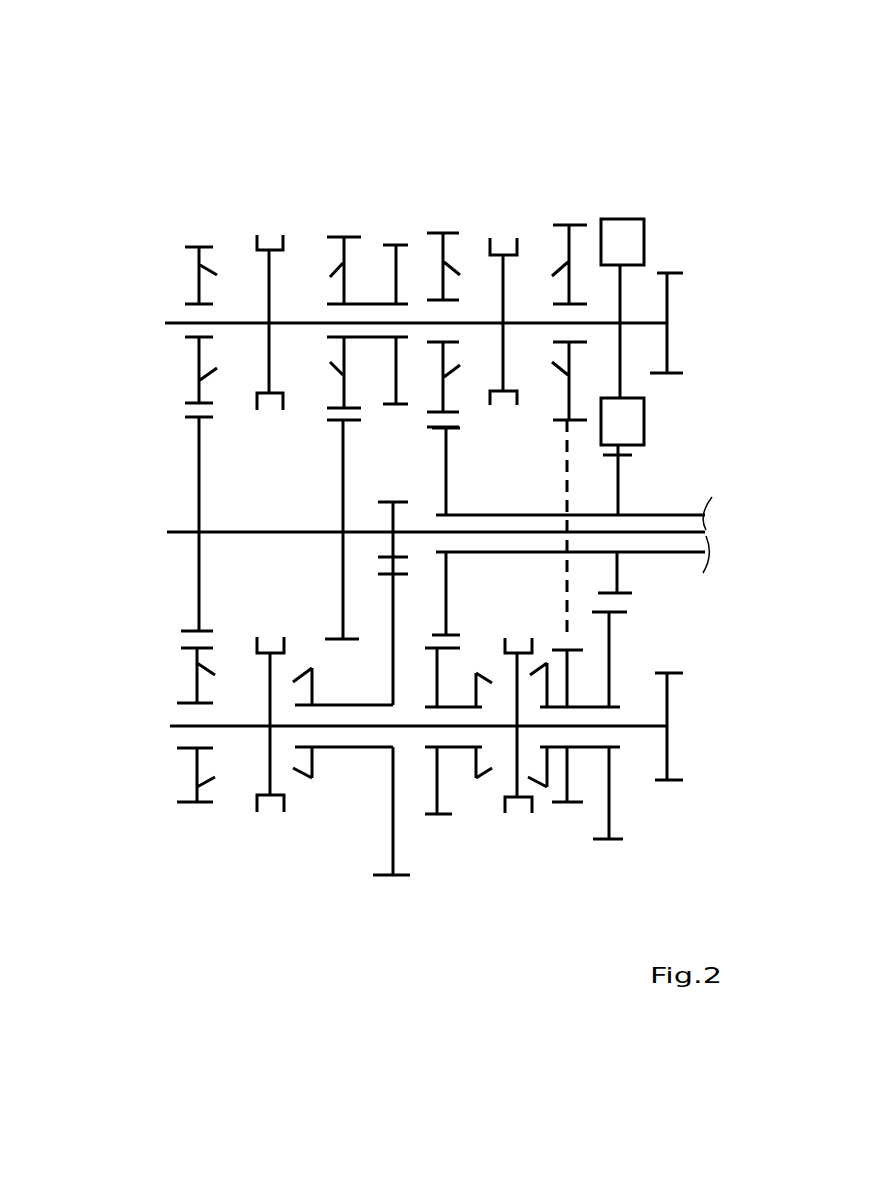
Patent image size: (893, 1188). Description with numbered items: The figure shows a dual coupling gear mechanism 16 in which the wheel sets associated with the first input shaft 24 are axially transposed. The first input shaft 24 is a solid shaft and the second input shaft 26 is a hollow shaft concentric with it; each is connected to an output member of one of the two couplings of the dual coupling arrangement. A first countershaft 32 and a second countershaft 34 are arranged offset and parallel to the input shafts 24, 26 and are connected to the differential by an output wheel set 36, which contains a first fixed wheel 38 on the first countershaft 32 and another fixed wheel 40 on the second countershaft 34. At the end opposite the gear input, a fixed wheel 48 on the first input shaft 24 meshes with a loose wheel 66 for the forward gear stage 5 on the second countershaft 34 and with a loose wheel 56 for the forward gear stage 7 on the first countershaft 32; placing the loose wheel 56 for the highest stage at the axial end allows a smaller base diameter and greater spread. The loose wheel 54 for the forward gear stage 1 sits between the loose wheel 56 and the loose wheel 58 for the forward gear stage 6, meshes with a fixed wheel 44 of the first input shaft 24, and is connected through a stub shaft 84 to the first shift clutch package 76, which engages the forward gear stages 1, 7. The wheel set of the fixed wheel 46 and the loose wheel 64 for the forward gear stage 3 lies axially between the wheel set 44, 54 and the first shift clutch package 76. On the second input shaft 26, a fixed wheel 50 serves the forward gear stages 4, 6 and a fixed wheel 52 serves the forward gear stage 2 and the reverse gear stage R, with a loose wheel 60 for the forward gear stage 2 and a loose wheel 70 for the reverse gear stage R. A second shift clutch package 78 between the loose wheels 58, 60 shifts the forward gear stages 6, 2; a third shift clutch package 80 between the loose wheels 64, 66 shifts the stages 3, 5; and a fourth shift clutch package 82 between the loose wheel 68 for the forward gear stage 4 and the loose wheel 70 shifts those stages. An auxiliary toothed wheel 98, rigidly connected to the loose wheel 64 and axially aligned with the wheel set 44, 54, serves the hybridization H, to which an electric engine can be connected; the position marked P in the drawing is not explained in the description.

The dual coupling gear mechanism 16 is at (724, 300).
The first input shaft 24 is at (710, 527).
The second input shaft 26 is at (688, 510).
The first countershaft 32 is at (188, 725).
The second countershaft 34 is at (178, 320).
The output wheel set 36 is at (672, 228).
The first fixed wheel 38 is at (668, 700).
The fixed wheel 40 is at (668, 340).
The first fixed wheel 44 is at (391, 500).
The second fixed wheel 46 is at (343, 456).
The third fixed wheel 48 is at (198, 470).
The first fixed wheel 50 is at (447, 465).
The second fixed wheel 52 is at (620, 489).
The loose wheel 54 is at (390, 833).
The loose wheel 56 is at (196, 762).
The loose wheel 58 is at (440, 790).
The loose wheel 60 is at (613, 815).
The loose wheel 64 is at (343, 258).
The loose wheel 66 is at (198, 357).
The loose wheel 68 is at (443, 252).
The loose wheel 70 is at (568, 250).
The first shift clutch package 76 is at (270, 833).
The second shift clutch package 78 is at (517, 828).
The third shift clutch package 80 is at (265, 218).
The fourth shift clutch package 82 is at (509, 208).
The stub shaft 84 is at (352, 748).
The auxiliary toothed wheel 98 is at (395, 277).
The forward gear stage 5 is at (201, 247).
The forward gear stage 3 is at (367, 304).
The hybridization H is at (397, 207).
The forward gear stage 4 is at (443, 308).
The reverse gear stage R is at (569, 304).
The parking gear P is at (622, 316).
The forward gear stage 7 is at (196, 740).
The forward gear stage 1 is at (347, 872).
The forward gear stage 6 is at (458, 798).
The forward gear stage 2 is at (579, 813).